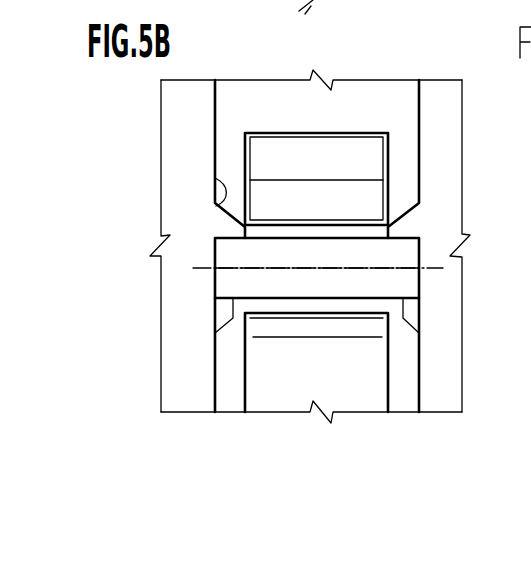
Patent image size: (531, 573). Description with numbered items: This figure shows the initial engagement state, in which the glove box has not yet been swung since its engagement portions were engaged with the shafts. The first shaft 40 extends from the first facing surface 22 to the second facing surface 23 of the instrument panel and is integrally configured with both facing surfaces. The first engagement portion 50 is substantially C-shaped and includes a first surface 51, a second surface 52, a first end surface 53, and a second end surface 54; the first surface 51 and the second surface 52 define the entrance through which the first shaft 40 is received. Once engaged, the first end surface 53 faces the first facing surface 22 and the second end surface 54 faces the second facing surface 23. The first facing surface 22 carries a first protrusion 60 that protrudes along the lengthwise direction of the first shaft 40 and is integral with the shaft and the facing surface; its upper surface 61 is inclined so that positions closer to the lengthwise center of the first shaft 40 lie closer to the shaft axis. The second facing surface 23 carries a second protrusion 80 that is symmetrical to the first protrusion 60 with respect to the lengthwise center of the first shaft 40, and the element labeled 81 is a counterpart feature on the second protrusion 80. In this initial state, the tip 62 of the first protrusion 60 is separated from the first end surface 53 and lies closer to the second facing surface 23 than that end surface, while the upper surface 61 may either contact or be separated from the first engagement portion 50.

The first facing surface 22 is at (218, 97).
The second facing surface 23 is at (414, 97).
The first engagement portion 50 is at (345, 115).
The first surface 51 is at (313, 228).
The second surface 52 is at (322, 314).
The first end surface 53 is at (244, 150).
The second end surface 54 is at (393, 153).
The first protrusion 60 is at (205, 231).
The upper surface 61 is at (216, 180).
The tip 62 is at (245, 238).
The second protrusion 80 is at (412, 224).
The center line of support plate 81 is at (386, 238).
The first shaft 40 is at (368, 285).